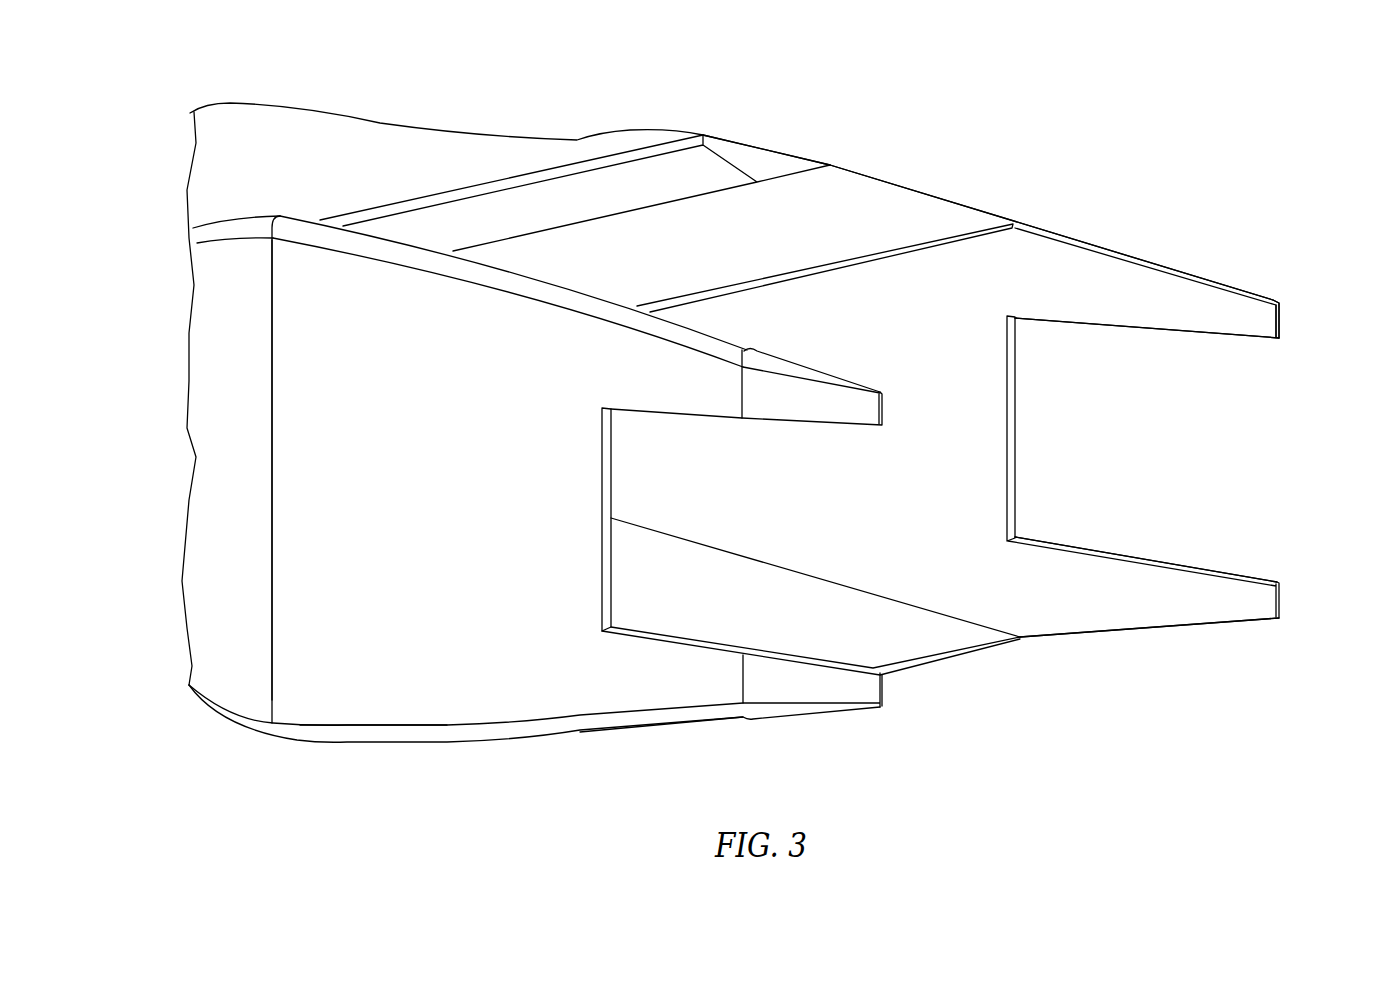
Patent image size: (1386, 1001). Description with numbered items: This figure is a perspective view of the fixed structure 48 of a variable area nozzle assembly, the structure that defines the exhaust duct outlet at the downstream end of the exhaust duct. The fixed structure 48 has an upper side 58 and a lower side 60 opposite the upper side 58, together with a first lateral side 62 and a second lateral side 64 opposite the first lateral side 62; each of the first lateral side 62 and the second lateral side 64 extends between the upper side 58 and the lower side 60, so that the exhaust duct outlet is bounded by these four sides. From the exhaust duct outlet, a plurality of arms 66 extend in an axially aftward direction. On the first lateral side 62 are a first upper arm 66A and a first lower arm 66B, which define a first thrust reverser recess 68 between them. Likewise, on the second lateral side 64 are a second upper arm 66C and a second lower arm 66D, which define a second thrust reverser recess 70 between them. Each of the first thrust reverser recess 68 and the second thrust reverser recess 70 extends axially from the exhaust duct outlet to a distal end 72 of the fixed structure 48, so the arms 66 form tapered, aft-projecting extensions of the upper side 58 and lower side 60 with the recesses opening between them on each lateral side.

The fixed structure 48 is at (1047, 166).
The upper side 58 is at (867, 205).
The lower side 60 is at (661, 742).
The first lateral side 62 is at (513, 637).
The second lateral side 64 is at (1028, 431).
The plurality of arms 66 is at (1253, 638).
The first upper arm 66A is at (690, 378).
The first lower arm 66B is at (690, 677).
The second upper arm 66C is at (1150, 293).
The second lower arm 66D is at (1147, 610).
The first thrust reverser recess 68 is at (765, 579).
The second thrust reverser recess 70 is at (1285, 398).
The distal end 72 is at (1288, 288).